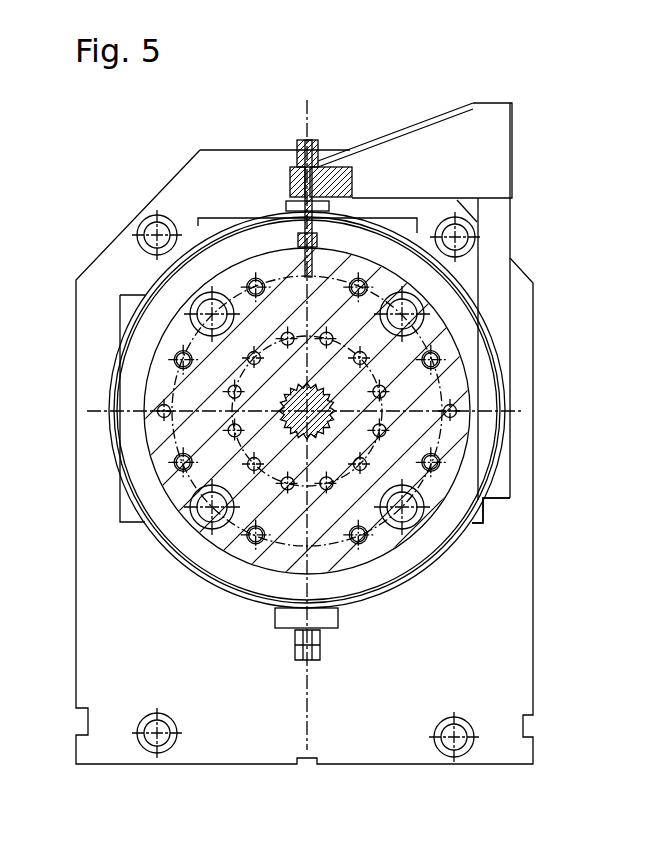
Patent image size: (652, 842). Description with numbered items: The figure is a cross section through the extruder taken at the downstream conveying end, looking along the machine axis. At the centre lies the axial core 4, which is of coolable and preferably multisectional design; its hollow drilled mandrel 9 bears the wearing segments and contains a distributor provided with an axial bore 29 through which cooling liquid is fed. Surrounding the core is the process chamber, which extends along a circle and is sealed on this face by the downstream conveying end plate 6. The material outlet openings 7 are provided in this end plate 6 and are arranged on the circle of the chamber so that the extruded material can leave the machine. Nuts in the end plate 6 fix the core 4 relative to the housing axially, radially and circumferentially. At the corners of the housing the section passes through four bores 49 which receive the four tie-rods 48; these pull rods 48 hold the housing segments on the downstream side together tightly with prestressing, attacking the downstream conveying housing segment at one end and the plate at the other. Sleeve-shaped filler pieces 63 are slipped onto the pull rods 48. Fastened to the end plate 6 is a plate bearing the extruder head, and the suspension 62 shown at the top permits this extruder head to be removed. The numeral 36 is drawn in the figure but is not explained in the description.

The suspension 62 is at (453, 138).
The axial core 4 is at (390, 387).
The material outlet openings 7 is at (389, 426).
The inner hole ring 36 is at (272, 400).
The hollow drilled mandrel 9 is at (275, 433).
The axial bore 29 is at (439, 498).
The downstream conveying end plate 6 is at (490, 521).
The tie-rods 48 is at (208, 517).
The sleeve-shaped filler pieces 63 is at (207, 515).
The bores 49 is at (396, 535).